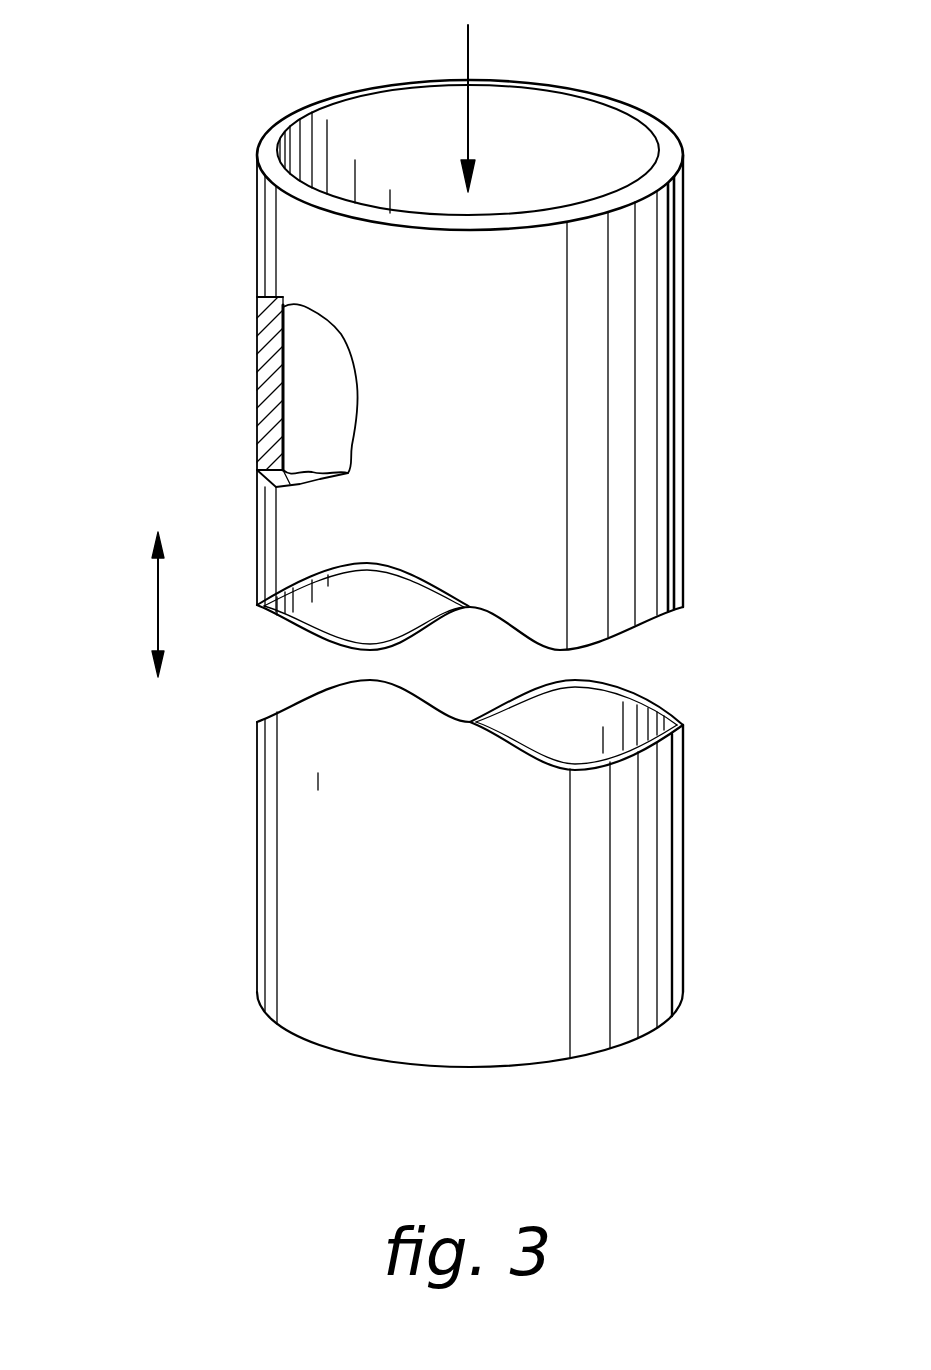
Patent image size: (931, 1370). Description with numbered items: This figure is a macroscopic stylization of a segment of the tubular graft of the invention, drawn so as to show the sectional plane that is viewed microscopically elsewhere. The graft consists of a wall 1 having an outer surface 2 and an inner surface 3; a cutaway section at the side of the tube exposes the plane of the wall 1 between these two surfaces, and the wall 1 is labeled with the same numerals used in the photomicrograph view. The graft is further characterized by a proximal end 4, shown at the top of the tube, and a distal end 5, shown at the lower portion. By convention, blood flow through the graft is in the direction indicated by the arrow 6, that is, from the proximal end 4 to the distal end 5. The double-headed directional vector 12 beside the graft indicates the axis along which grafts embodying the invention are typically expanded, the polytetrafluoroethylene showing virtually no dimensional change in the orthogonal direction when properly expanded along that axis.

The wall 1 is at (268, 340).
The outer surface 2 is at (650, 267).
The inner surface 3 is at (648, 153).
The proximal end 4 is at (568, 147).
The distal end 5 is at (347, 1057).
The arrow 6 is at (468, 58).
The directional vector 12 is at (158, 602).